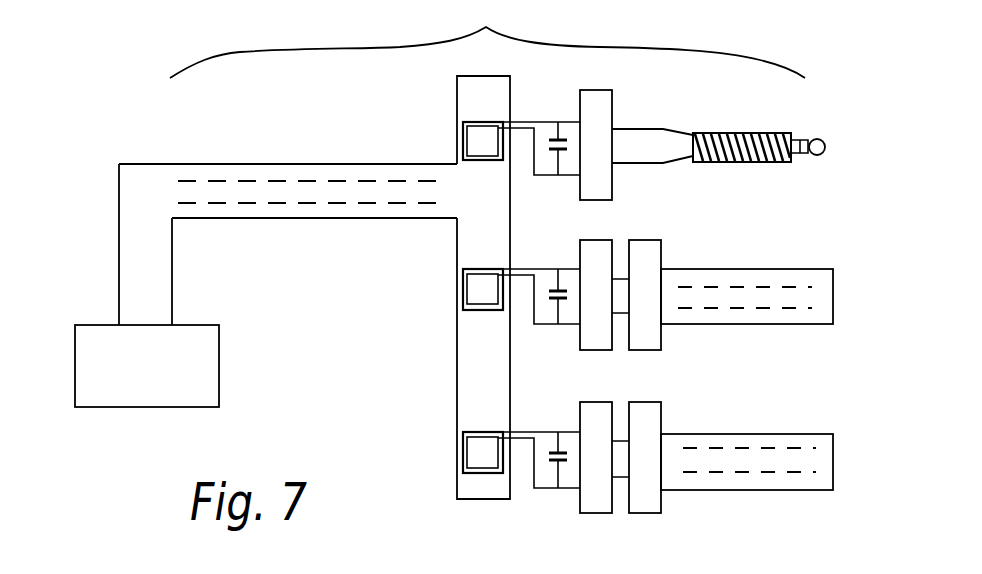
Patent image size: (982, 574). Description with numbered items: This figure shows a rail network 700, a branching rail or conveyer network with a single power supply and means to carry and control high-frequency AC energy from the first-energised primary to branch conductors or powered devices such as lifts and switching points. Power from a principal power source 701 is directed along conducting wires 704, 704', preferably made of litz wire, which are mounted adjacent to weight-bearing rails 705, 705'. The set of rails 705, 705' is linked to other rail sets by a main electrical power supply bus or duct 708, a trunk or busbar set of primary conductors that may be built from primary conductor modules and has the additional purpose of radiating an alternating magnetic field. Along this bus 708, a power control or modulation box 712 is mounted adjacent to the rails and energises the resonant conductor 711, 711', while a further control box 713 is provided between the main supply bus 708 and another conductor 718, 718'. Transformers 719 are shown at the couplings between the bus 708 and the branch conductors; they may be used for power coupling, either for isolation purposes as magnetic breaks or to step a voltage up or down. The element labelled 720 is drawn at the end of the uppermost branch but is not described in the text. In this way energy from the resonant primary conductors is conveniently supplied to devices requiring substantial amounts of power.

The rail network 700 is at (487, 39).
The principal power source 701 is at (276, 384).
The conducting wire 704 is at (93, 244).
The conducting wire 704' is at (202, 271).
The weight-bearing rail 705 is at (288, 161).
The weight-bearing rail 705' is at (314, 236).
The main electrical power supply bus 708 is at (563, 372).
The transformer 719 is at (461, 270).
The power control or modulation box 712 is at (603, 240).
The control box 713 is at (640, 350).
The resonant conductor 711 is at (747, 280).
The resonant conductor 711' is at (745, 332).
The conductor 718 is at (747, 447).
The conductor 718' is at (749, 501).
The threaded probe shaft 720 is at (766, 131).